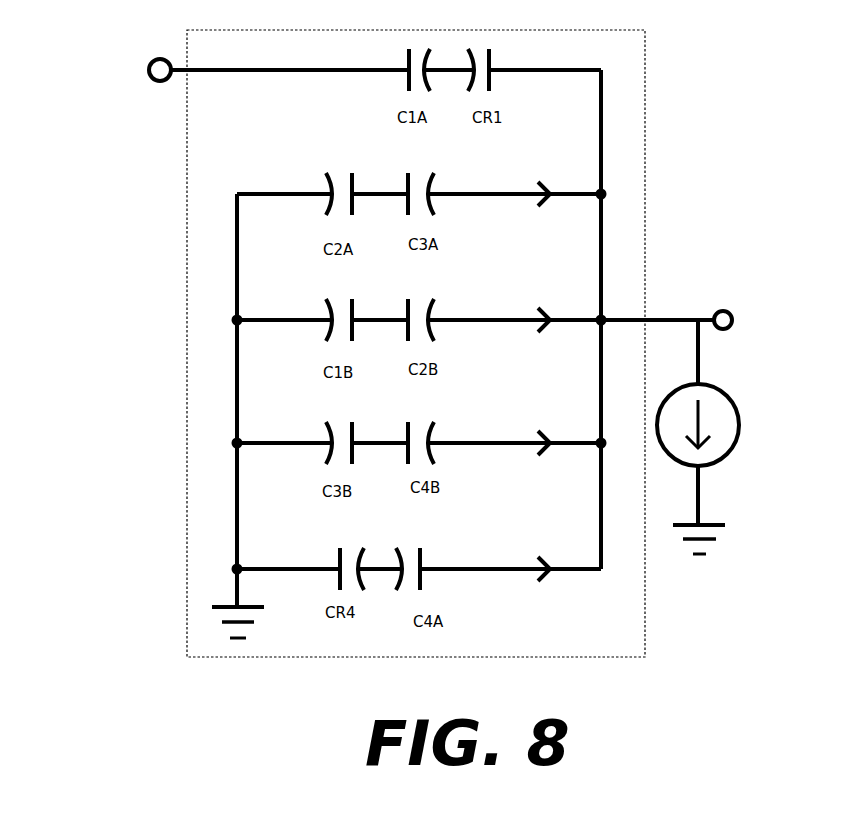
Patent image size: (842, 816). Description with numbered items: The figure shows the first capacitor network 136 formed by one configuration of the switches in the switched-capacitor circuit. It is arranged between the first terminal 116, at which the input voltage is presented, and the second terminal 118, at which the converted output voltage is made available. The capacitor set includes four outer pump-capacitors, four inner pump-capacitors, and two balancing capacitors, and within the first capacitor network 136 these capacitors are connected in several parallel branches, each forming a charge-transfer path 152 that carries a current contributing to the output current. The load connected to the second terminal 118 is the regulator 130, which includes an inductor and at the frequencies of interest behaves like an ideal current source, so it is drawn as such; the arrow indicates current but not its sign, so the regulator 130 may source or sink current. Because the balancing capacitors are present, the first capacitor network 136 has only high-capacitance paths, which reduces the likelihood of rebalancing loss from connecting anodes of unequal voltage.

The first terminal 116 is at (152, 80).
The second terminal 118 is at (730, 313).
The regulator 130 is at (740, 403).
The first capacitor network 136 is at (618, 645).
The charge-transfer path 152 is at (532, 73).